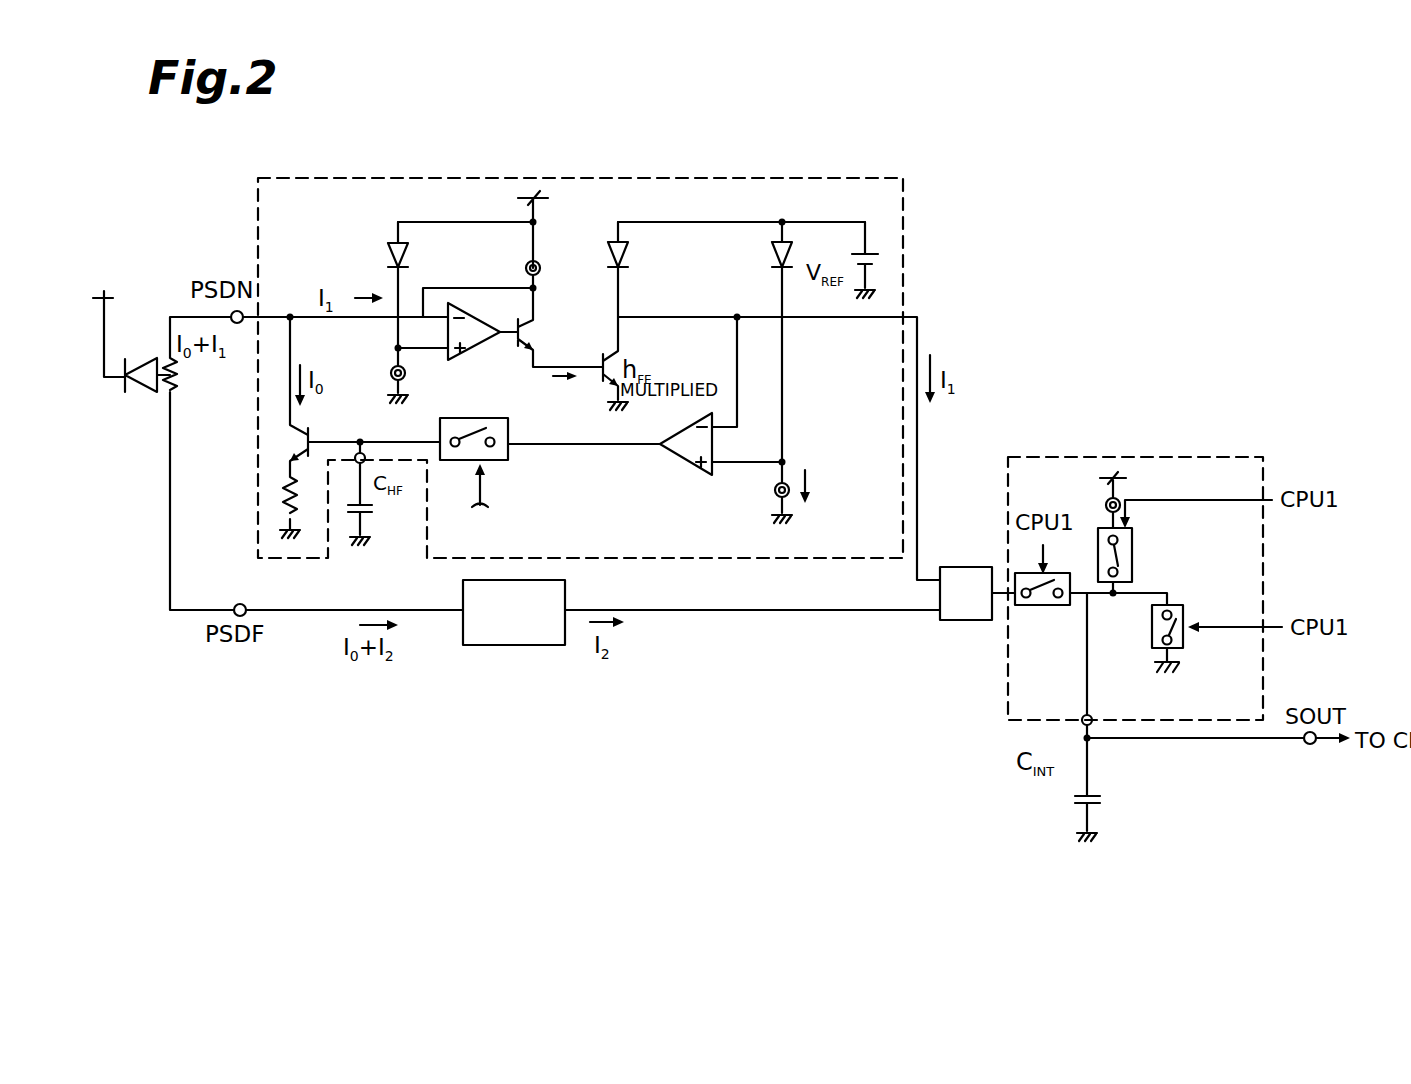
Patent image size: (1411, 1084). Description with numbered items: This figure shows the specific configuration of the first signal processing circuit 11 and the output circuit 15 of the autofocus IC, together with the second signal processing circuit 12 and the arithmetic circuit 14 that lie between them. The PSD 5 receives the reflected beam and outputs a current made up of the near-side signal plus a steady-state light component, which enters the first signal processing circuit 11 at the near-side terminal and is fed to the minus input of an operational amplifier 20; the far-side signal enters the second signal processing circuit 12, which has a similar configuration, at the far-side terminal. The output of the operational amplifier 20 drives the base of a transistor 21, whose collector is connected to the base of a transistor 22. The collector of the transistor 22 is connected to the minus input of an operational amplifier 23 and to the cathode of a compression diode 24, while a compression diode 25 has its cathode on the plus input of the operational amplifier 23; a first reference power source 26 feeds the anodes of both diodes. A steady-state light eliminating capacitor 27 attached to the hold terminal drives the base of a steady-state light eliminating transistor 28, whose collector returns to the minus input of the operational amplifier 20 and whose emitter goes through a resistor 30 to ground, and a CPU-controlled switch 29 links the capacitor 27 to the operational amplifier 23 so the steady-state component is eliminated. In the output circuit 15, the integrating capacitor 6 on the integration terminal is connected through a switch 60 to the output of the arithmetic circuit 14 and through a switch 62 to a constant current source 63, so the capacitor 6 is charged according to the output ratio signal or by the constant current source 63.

The PSD 5 is at (156, 364).
The integrating capacitor 6 is at (1100, 798).
The first signal processing circuit 11 is at (497, 178).
The second signal processing circuit 12 is at (510, 647).
The arithmetic circuit 14 is at (972, 567).
The output circuit 15 is at (1185, 457).
The operational amplifier 20 is at (468, 360).
The transistor 21 is at (521, 352).
The transistor 22 is at (596, 386).
The operational amplifier 23 is at (680, 476).
The compression diode 24 is at (607, 255).
The compression diode 25 is at (767, 262).
The first reference power source 26 is at (870, 252).
The steady-state light eliminating capacitor 27 is at (375, 512).
The steady-state light eliminating transistor 28 is at (357, 430).
The switch 29 is at (512, 455).
The resistor 30 is at (288, 497).
The switch 60 is at (1048, 606).
The switch 62 is at (1098, 528).
The constant current source 63 is at (1120, 493).